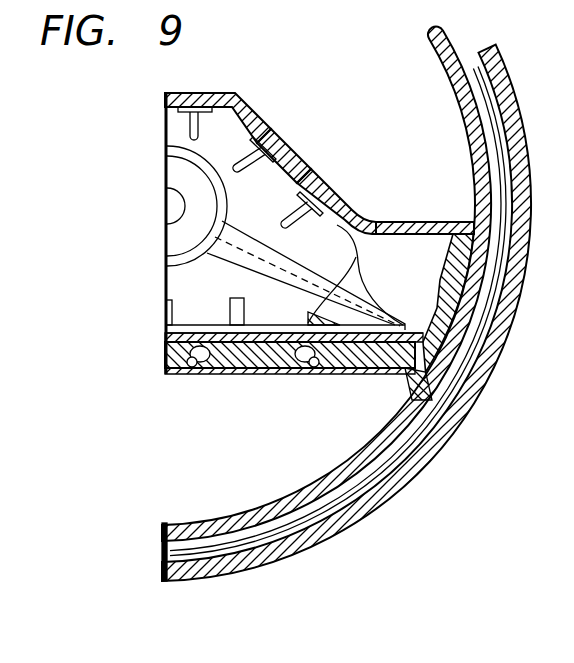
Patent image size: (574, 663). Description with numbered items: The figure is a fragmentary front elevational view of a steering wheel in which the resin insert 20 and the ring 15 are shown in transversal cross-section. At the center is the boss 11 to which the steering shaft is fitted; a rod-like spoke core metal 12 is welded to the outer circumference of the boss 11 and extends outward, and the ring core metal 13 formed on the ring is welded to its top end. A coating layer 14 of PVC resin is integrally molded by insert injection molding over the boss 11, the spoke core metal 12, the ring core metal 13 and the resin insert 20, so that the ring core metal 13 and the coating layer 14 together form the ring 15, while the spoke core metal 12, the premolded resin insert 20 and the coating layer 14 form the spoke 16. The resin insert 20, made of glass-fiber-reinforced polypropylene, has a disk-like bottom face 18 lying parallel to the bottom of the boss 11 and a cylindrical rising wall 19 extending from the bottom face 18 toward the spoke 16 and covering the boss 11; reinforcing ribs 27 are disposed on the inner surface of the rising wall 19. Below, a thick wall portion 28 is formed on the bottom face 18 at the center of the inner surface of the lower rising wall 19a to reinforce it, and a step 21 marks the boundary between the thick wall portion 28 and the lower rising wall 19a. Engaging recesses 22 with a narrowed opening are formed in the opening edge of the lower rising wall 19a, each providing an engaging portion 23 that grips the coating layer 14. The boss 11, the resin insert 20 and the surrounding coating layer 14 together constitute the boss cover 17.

The boss 11 is at (208, 201).
The spoke core metal 12 is at (283, 272).
The ring core metal 13 is at (462, 378).
The coating layer 14 is at (167, 337).
The ring 15 is at (220, 574).
The spoke 16 is at (417, 222).
The boss cover 17 is at (292, 104).
The bottom face 18 is at (170, 133).
The rising wall 19 is at (302, 163).
The lower rising wall 19a is at (176, 350).
The resin insert 20 is at (258, 362).
The step 21 is at (253, 333).
The engaging recess 22 is at (190, 368).
The engaging portion 23 is at (217, 373).
The reinforcing rib 27 is at (197, 126).
The thick wall portion 28 is at (354, 257).